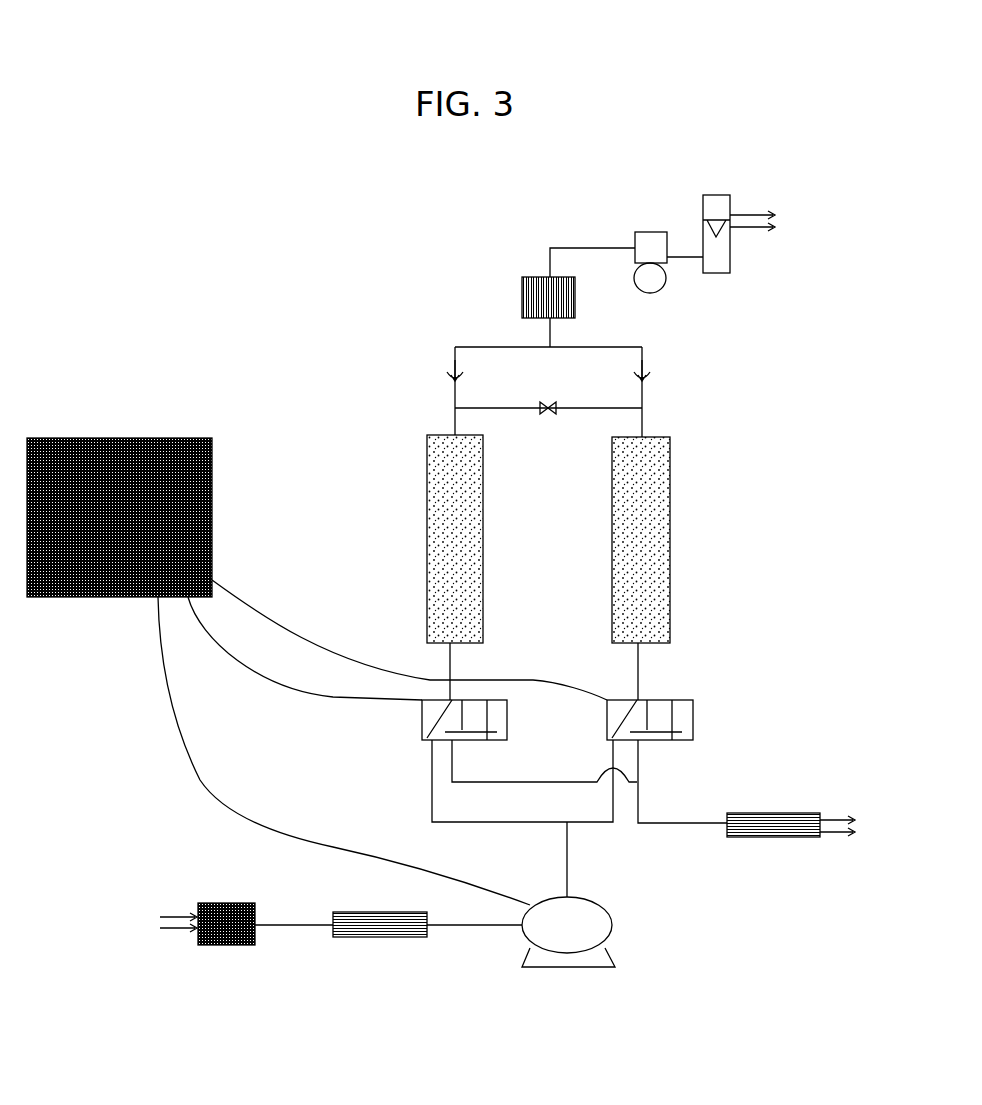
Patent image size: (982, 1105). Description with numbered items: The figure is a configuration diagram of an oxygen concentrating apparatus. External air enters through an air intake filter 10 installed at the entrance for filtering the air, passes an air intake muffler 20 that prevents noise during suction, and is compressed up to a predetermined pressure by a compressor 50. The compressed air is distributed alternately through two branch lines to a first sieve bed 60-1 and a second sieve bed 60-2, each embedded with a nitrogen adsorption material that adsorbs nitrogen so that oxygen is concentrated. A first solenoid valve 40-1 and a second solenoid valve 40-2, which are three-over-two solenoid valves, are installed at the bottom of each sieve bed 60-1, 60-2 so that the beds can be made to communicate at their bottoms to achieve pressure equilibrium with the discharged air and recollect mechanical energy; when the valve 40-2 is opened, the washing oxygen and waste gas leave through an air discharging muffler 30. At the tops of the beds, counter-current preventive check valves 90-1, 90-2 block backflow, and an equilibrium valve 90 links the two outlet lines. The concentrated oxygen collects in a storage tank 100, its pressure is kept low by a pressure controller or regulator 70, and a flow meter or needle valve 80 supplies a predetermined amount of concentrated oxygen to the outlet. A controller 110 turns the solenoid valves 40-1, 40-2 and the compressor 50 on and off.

The air intake filter 10 is at (225, 903).
The muffler 20 is at (400, 937).
The air discharging muffler 30 is at (790, 812).
The first solenoid valve 40-1 is at (422, 727).
The second solenoid valve 40-2 is at (693, 700).
The compressor 50 is at (612, 925).
The first sieve bed 60-1 is at (670, 512).
The second sieve bed 60-2 is at (427, 515).
The pressure controller or regulator 70 is at (666, 284).
The flow meter or needle valve 80 is at (703, 210).
The equilibrium valve 90 is at (549, 416).
The counter-current preventive check valve 90-1 is at (455, 375).
The counter-current preventive check valve 90-2 is at (655, 377).
The storage tank 100 is at (522, 296).
The controller 110 is at (92, 438).